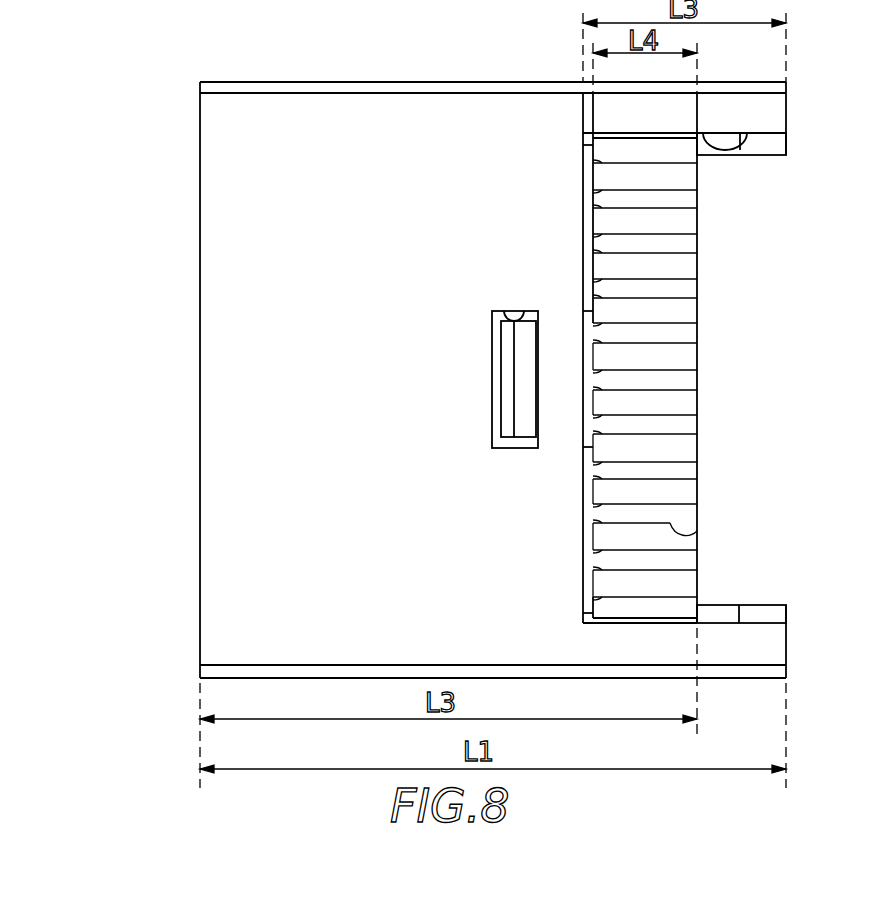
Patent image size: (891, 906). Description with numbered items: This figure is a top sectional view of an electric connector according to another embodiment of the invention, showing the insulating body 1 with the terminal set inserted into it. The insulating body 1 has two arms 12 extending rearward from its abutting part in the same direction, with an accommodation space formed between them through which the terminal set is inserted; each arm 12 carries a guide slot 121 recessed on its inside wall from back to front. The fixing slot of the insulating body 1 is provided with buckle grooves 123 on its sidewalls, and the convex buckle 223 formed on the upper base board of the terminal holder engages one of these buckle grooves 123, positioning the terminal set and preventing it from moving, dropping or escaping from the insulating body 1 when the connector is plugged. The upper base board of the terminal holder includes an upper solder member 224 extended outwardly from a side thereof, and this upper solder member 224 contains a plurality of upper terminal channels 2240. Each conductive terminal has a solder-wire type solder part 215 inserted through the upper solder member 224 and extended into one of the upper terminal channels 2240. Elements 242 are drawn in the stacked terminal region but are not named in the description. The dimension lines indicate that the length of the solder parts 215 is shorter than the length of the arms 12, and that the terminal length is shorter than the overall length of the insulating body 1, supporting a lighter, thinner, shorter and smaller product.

The insulating body 1 is at (767, 659).
The arm 12 is at (643, 122).
The guide slot 121 is at (745, 143).
The buckle groove 123 is at (526, 310).
The solder part 215 is at (697, 359).
The convex buckle 223 is at (525, 379).
The upper solder member 224 is at (652, 623).
The terminal tabs 242 is at (670, 583).
The upper terminal channel 2240 is at (697, 533).